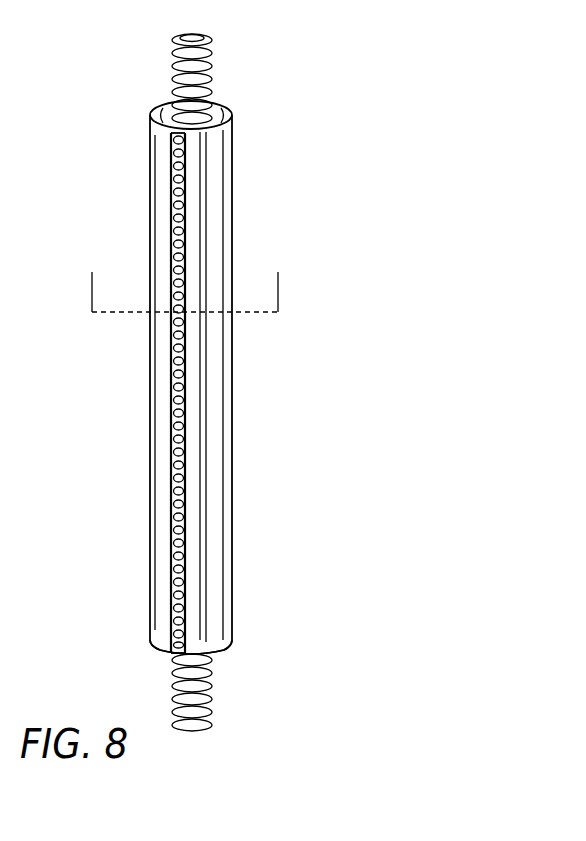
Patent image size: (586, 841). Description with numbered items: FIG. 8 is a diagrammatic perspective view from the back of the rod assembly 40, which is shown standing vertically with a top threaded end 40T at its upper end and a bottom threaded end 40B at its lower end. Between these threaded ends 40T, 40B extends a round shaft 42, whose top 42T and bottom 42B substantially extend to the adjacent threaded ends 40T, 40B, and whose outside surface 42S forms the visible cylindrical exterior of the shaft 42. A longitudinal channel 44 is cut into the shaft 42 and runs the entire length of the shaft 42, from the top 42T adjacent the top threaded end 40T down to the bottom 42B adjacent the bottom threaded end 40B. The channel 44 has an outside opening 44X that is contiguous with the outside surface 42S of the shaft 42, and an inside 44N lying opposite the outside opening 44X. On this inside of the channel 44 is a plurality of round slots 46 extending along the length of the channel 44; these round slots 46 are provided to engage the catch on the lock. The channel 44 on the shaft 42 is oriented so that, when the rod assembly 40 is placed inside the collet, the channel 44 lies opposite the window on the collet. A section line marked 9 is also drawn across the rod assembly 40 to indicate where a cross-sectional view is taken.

The rod assembly 40 is at (212, 391).
The top threaded end 40T is at (208, 46).
The bottom threaded end 40B is at (205, 728).
The round shaft 42 is at (228, 386).
The top of the shaft 42T is at (232, 119).
The bottom of the shaft 42B is at (226, 654).
The outside surface 42S is at (217, 398).
The longitudinal channel 44 is at (128, 407).
The outside opening 44X is at (172, 180).
The inside of the channel 44N is at (172, 655).
The round slots 46 is at (173, 440).
The section line 9- 9 is at (183, 280).